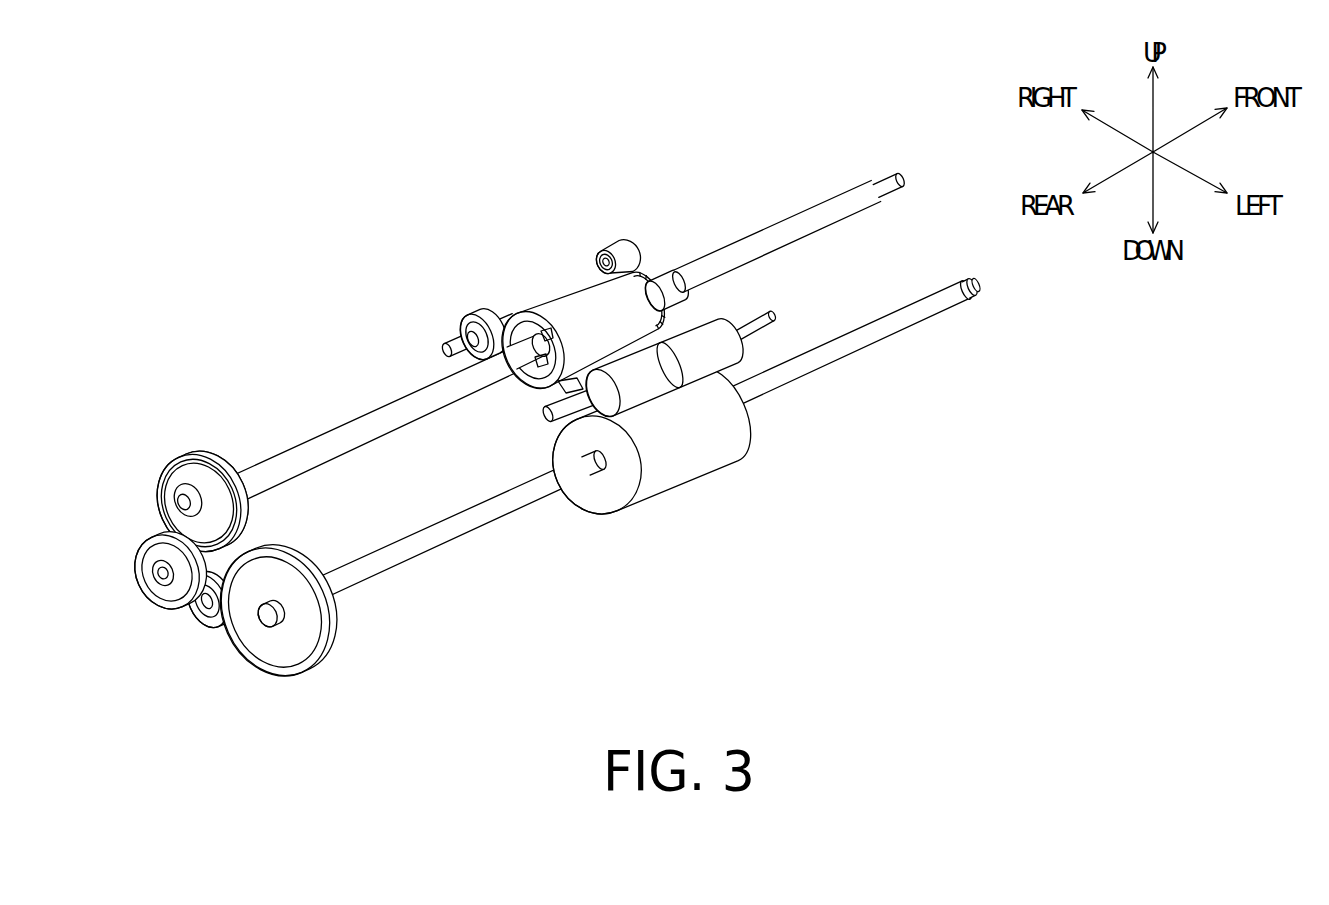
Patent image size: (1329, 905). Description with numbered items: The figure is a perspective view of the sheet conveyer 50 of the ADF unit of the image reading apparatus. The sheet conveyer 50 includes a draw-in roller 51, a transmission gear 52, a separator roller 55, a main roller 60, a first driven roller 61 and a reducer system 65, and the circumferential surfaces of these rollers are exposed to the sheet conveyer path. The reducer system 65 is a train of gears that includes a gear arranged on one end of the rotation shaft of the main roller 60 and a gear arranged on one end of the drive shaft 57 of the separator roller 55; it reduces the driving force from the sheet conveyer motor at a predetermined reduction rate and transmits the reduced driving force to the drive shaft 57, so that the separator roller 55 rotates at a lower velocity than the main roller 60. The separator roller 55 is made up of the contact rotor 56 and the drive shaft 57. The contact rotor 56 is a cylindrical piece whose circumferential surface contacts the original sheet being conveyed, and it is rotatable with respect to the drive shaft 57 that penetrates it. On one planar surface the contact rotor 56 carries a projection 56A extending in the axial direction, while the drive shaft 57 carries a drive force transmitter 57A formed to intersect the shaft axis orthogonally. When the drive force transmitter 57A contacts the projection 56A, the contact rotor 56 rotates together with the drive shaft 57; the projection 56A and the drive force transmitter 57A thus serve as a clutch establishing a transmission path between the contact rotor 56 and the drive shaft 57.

The sheet conveyer 50 is at (552, 402).
The draw-in roller 51 is at (455, 325).
The transmission gear 52 is at (622, 250).
The separator roller 55 is at (649, 284).
The contact rotor 56 is at (570, 322).
The projection 56A is at (515, 298).
The drive shaft 57 is at (328, 440).
The drive force transmitter 57A is at (530, 377).
The main roller 60 is at (626, 445).
The first driven roller 61 is at (714, 330).
The reducer system 65 is at (196, 442).